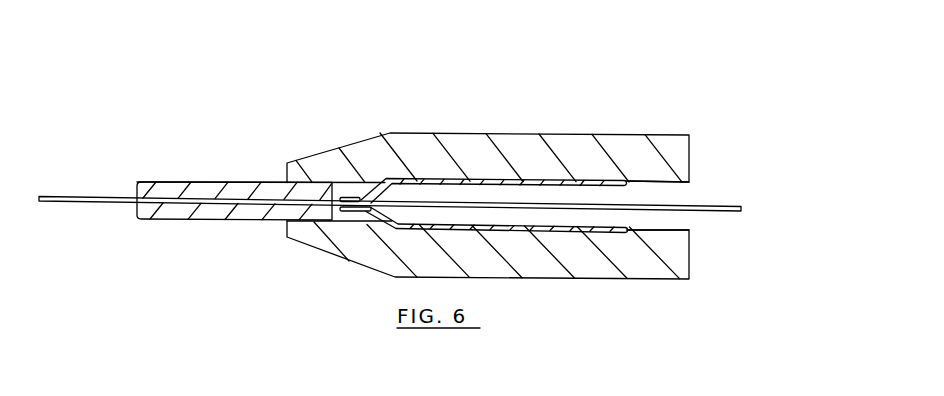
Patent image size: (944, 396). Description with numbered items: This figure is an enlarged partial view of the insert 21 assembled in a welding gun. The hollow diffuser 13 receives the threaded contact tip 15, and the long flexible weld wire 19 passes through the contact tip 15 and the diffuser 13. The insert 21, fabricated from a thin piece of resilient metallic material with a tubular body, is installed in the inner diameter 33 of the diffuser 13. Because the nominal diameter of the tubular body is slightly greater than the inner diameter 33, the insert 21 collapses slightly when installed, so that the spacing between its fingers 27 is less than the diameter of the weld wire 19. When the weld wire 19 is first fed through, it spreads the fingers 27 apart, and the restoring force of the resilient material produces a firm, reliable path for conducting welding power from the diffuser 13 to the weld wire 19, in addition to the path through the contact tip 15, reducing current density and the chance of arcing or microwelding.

The diffuser 13 is at (607, 279).
The contact tip 15 is at (198, 183).
The weld wire 19 is at (725, 215).
The insert 21 is at (538, 178).
The fingers 27 is at (337, 197).
The inner diameter 33 is at (670, 182).